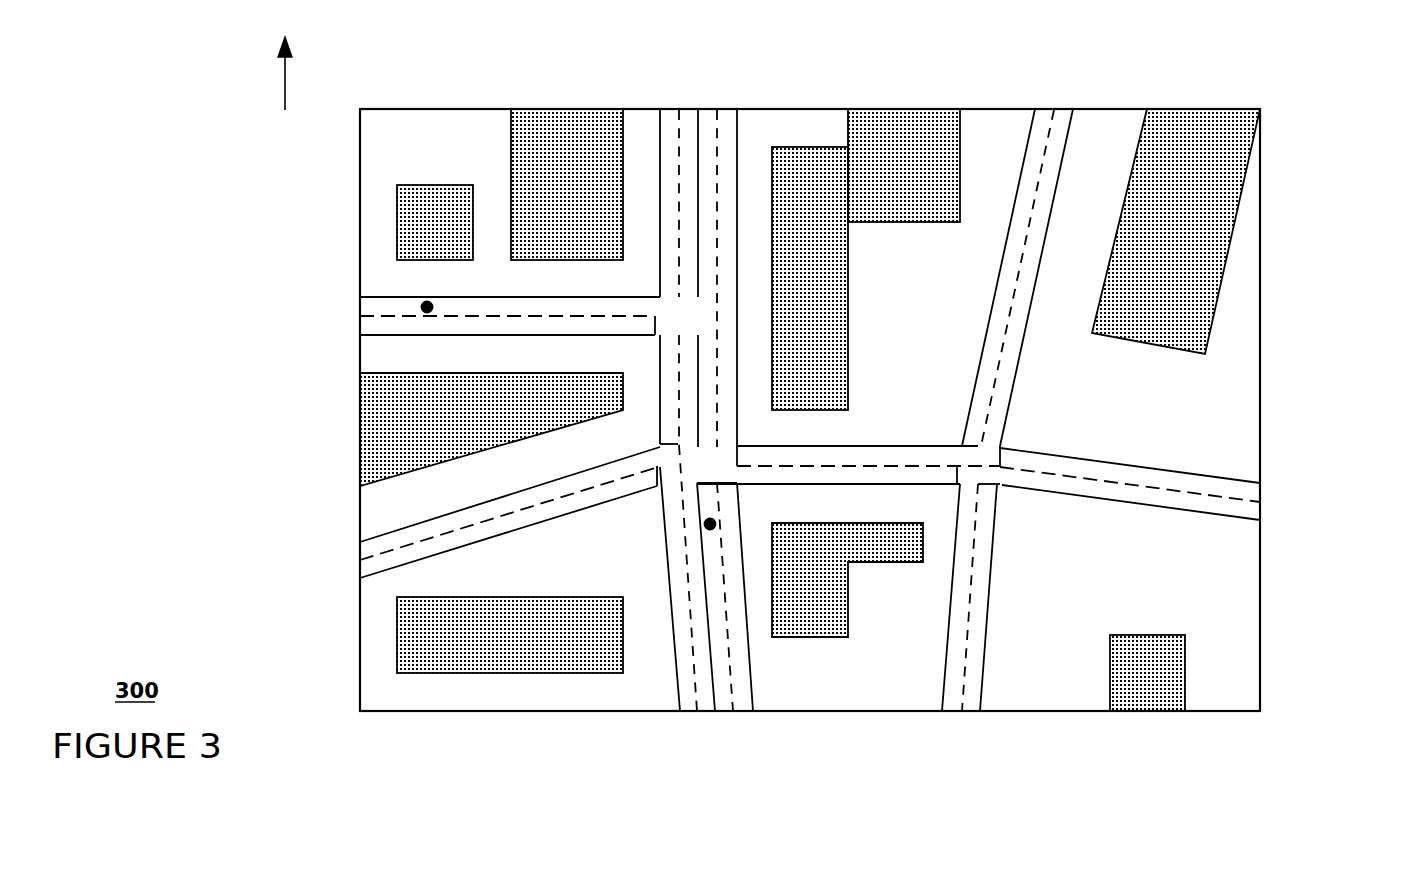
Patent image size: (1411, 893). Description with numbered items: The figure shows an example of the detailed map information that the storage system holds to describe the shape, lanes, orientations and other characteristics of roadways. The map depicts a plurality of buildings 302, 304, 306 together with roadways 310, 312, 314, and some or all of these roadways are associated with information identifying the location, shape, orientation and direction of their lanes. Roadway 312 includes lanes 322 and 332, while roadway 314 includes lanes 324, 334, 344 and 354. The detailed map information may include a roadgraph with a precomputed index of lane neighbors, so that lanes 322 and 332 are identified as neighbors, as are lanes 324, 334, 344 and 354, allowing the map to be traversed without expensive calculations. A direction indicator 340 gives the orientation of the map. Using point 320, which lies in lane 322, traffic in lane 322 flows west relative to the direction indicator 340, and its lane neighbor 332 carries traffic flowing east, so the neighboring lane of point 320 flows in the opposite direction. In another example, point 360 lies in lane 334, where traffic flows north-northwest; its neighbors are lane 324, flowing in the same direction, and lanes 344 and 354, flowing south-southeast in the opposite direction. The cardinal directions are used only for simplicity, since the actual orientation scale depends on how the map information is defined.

The building 302 is at (397, 230).
The building 304 is at (397, 641).
The building 306 is at (1235, 237).
The roadway 310 is at (998, 365).
The roadway 312 is at (362, 318).
The roadway 314 is at (712, 623).
The point 320 is at (427, 308).
The lane 322 is at (387, 302).
The lane 324 is at (730, 506).
The lane 332 is at (390, 331).
The lane 334 is at (720, 662).
The direction indicator 340 is at (290, 97).
The lane 344 is at (705, 697).
The lane 354 is at (677, 579).
The point 360 is at (710, 524).